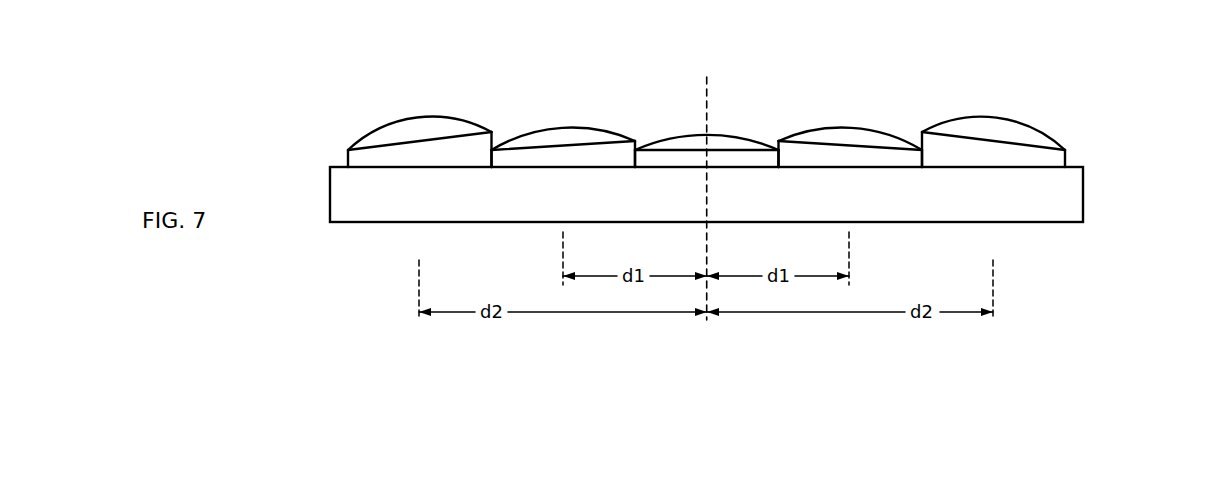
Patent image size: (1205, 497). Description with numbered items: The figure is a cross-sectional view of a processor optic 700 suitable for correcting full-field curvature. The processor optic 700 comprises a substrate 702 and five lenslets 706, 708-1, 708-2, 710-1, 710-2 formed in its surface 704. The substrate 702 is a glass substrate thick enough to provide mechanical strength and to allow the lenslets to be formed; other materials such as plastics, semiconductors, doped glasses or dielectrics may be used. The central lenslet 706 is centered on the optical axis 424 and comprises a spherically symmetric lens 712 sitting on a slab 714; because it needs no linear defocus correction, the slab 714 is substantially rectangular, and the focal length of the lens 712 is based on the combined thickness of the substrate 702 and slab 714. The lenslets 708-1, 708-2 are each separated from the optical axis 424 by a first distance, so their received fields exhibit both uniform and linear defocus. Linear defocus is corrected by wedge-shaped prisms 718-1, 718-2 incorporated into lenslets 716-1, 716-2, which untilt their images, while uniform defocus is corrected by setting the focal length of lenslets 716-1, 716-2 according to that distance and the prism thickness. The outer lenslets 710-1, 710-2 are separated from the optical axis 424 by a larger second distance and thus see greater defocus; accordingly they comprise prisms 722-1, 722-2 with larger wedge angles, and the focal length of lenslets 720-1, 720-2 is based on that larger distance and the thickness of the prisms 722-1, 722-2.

The processor optic 700 is at (255, 64).
The substrate 702 is at (935, 223).
The surface 704 is at (1122, 113).
The lenslet 706 is at (702, 117).
The lenslet 708-1 is at (575, 118).
The lenslet 708-2 is at (843, 117).
The lenslet 710-1 is at (431, 118).
The lenslet 710-2 is at (995, 118).
The lens 712 is at (722, 133).
The slab 714 is at (722, 160).
The lenslet 716-1 is at (563, 135).
The lenslet 716-2 is at (849, 134).
The prism 718-1 is at (577, 159).
The prism 718-2 is at (840, 162).
The lenslet 720-1 is at (418, 132).
The lenslet 720-2 is at (993, 132).
The prism 722-1 is at (437, 160).
The prism 722-2 is at (979, 160).
The optical axis 424 is at (707, 190).